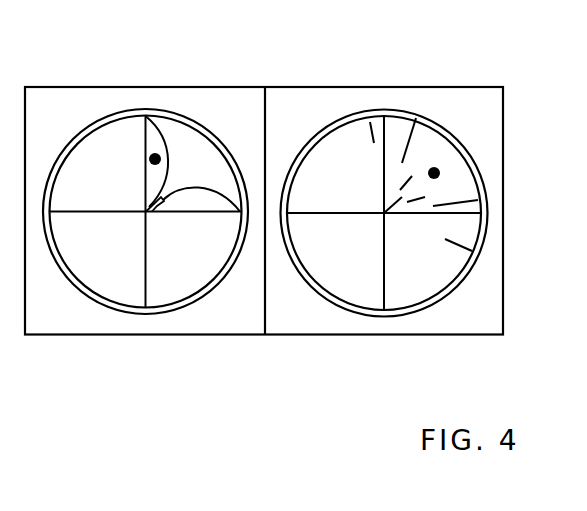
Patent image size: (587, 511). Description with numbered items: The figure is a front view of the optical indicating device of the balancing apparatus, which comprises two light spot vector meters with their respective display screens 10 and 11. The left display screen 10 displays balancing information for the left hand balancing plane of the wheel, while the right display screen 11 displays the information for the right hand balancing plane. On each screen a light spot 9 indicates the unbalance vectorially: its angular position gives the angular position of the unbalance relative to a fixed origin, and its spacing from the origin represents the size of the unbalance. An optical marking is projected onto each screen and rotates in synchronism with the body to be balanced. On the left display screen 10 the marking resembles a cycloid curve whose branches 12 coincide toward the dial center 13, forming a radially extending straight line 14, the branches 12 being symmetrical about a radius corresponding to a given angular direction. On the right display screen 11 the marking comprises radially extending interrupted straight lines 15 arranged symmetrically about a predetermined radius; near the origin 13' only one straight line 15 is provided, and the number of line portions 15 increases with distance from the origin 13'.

The light spot 9 is at (154, 153).
The left display screen 10 is at (105, 152).
The right display screen 11 is at (336, 167).
The curve branches 12 is at (213, 186).
The dial center 13 is at (145, 267).
The origin of the right hand screen 13' is at (384, 268).
The radially extending straight line 14 is at (160, 210).
The radially extending interrupted straight lines 15 is at (419, 194).